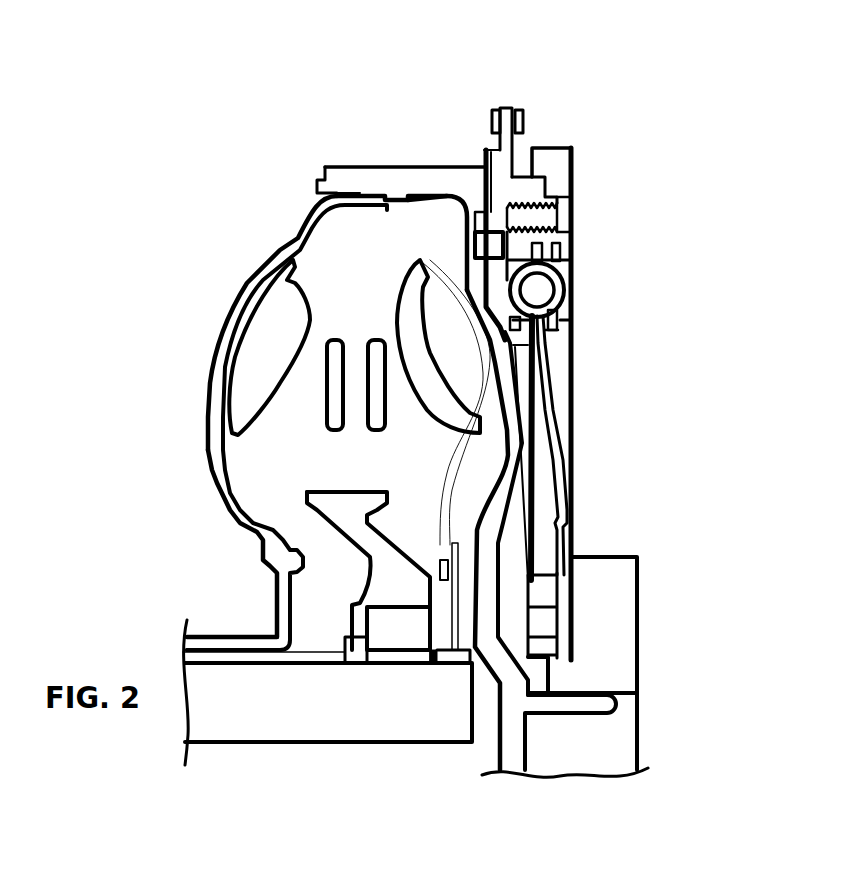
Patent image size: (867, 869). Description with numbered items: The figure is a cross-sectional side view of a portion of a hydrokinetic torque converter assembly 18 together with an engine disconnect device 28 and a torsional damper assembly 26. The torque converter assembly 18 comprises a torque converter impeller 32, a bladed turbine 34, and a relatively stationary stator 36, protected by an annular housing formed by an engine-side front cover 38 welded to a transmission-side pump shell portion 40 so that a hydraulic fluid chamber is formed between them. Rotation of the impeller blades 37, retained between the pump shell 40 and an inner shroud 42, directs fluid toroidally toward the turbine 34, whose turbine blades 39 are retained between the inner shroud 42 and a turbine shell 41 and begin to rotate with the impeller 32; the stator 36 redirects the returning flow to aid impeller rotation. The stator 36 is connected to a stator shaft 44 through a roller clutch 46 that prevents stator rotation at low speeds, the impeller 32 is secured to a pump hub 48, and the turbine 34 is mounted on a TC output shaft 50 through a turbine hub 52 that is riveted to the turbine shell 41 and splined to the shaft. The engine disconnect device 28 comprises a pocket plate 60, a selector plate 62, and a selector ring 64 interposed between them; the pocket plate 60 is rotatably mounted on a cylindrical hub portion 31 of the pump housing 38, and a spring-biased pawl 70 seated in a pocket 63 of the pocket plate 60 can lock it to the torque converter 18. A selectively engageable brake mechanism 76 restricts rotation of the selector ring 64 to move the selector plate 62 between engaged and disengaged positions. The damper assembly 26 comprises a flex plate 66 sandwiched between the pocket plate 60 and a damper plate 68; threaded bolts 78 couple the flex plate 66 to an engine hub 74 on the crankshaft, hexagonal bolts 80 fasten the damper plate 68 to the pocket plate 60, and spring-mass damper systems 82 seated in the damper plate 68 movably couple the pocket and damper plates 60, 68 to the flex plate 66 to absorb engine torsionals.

The torque converter assembly 18 is at (168, 185).
The damper assembly 26 is at (637, 258).
The engine disconnect device 28 is at (542, 90).
The hub portion 31 is at (527, 363).
The torque converter impeller 32 is at (360, 184).
The bladed turbine 34 is at (427, 190).
The stator 36 is at (408, 596).
The impeller blades 37 is at (305, 317).
The front cover 38 is at (408, 178).
The turbine blades 39 is at (450, 390).
The pump shell portion 40 is at (309, 234).
The turbine shell 41 is at (470, 453).
The inner shroud 42 is at (332, 397).
The stator shaft 44 is at (287, 643).
The roller clutch 46 is at (408, 641).
The pump hub 48 is at (220, 637).
The TC output shaft 50 is at (325, 721).
The turbine hub 52 is at (460, 570).
The pocket plate 60 is at (523, 192).
The selector plate 62 is at (490, 152).
The pocket 63 is at (520, 286).
The selector ring 64 is at (516, 108).
The flex plate 66 is at (566, 148).
The damper plate 68 is at (565, 322).
The pawl 70 is at (493, 247).
The engine hub 74 is at (617, 580).
The brake mechanism 76 is at (504, 108).
The threaded bolts 78 is at (542, 628).
The hexagonal bolts 80 is at (570, 212).
The spring-mass damper system 82 is at (560, 294).